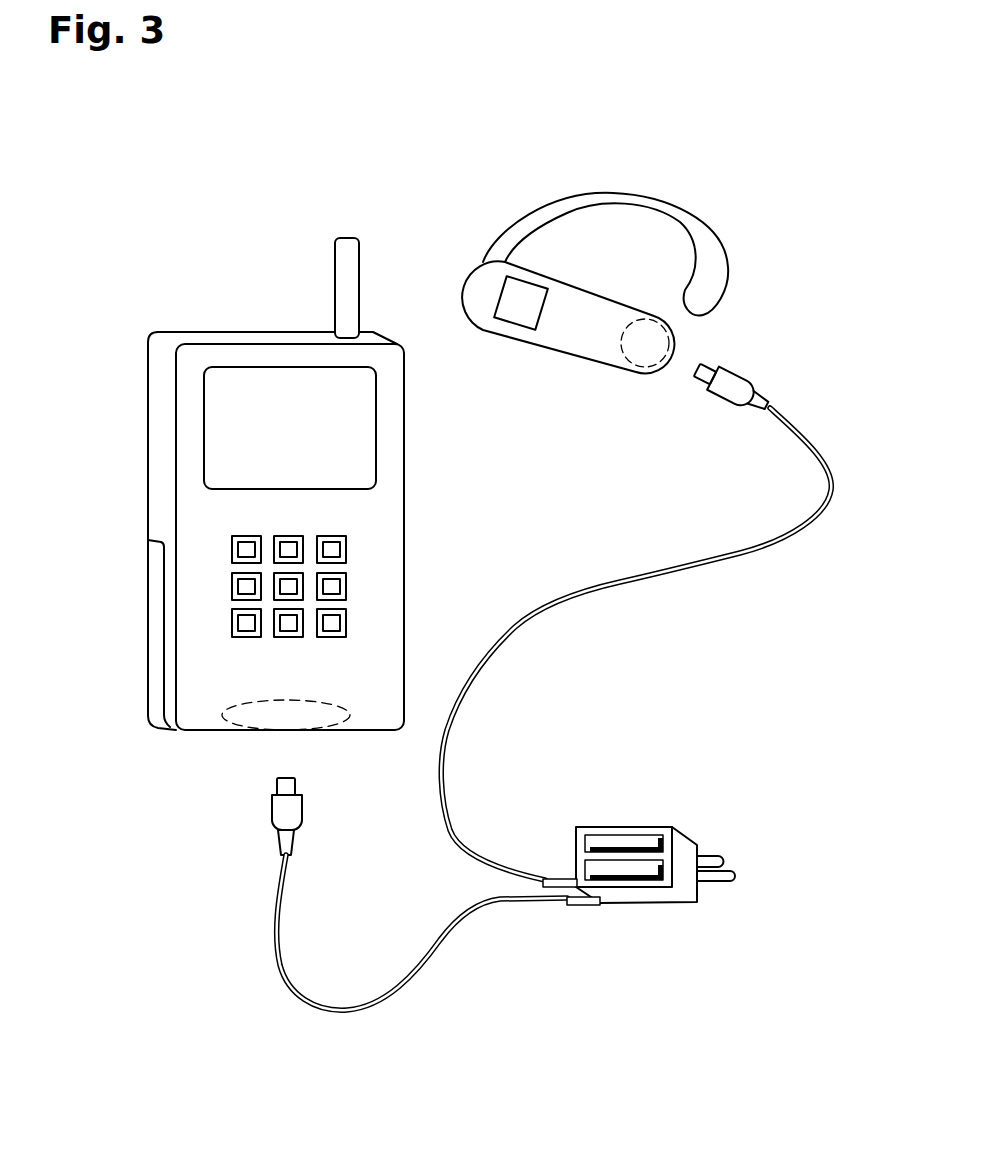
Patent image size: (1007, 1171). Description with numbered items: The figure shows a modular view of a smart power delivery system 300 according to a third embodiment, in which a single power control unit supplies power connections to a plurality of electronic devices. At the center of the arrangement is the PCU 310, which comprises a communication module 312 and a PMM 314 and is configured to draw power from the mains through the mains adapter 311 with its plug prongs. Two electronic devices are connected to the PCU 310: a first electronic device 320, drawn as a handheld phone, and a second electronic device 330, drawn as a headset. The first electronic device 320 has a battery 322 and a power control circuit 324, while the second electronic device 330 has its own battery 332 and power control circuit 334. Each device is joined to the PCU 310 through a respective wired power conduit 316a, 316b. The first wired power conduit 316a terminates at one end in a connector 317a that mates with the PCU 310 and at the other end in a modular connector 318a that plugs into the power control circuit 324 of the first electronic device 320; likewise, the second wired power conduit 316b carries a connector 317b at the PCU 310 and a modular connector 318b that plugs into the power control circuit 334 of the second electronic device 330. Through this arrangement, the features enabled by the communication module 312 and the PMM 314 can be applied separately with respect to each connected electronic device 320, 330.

The smart power delivery system 300 is at (755, 118).
The PCU 310 is at (690, 807).
The mains adapter 311 is at (685, 880).
The communication module 312 is at (625, 842).
The PMM 314 is at (640, 870).
The wired power conduit 316a is at (428, 945).
The wired power conduit 316b is at (620, 578).
The connector 317a is at (577, 905).
The connector 317b is at (560, 879).
The modular connector 318a is at (277, 785).
The modular connector 318b is at (705, 392).
The electronic device 320 is at (148, 367).
The battery 322 is at (148, 628).
The power control circuit 324 is at (285, 775).
The electronic device 330 is at (500, 337).
The battery 332 is at (528, 302).
The power control circuit 334 is at (700, 372).